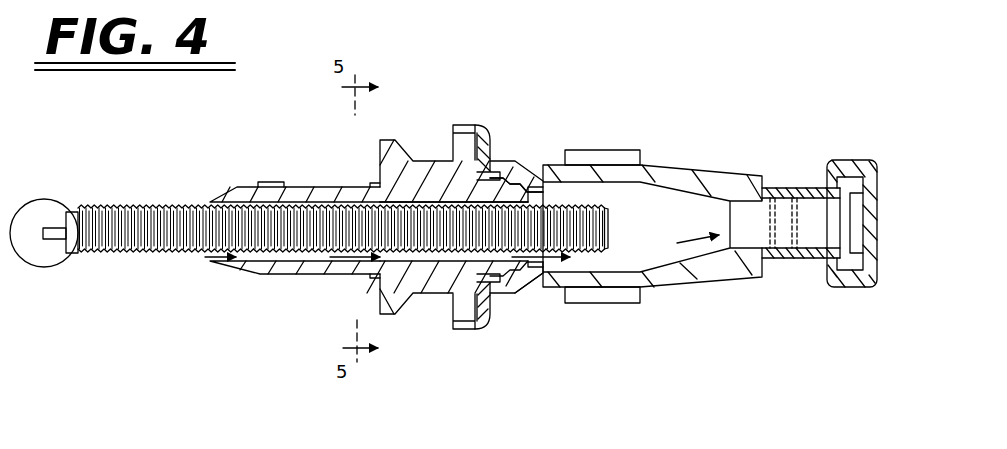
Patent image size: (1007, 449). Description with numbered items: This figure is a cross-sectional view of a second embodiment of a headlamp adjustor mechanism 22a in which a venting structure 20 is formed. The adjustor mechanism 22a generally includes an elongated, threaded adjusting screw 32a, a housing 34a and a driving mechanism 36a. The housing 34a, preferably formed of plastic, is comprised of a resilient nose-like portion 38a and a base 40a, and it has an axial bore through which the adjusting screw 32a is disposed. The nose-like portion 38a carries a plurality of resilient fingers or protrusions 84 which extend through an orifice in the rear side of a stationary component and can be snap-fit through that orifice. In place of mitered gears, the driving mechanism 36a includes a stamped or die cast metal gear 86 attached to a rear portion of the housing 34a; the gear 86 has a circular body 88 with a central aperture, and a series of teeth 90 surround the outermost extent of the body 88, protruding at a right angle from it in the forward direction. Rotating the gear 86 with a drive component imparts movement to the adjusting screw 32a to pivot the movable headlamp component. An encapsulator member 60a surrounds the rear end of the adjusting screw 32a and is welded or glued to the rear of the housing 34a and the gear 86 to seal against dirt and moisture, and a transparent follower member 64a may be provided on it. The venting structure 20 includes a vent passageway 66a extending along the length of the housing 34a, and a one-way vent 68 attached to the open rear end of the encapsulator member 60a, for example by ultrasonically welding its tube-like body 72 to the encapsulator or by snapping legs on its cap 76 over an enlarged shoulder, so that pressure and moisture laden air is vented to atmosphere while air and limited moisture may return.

The venting structure 20 is at (873, 130).
The headlamp adjustor mechanism 22a is at (405, 133).
The adjusting screw 32a is at (145, 215).
The housing 34a is at (430, 159).
The driving mechanism 36a is at (498, 146).
The nose-like portion 38a is at (300, 266).
The base 40a is at (383, 290).
The encapsulator member 60a is at (724, 171).
The follower member 64a is at (610, 149).
The vent passageway 66a is at (447, 262).
The one-way vent 68 is at (811, 265).
The tube-like body 72 is at (771, 190).
The cap 76 is at (881, 254).
The resilient protrusions 84 is at (259, 188).
The gear 86 is at (486, 135).
The circular body 88 is at (490, 305).
The teeth 90 is at (478, 332).